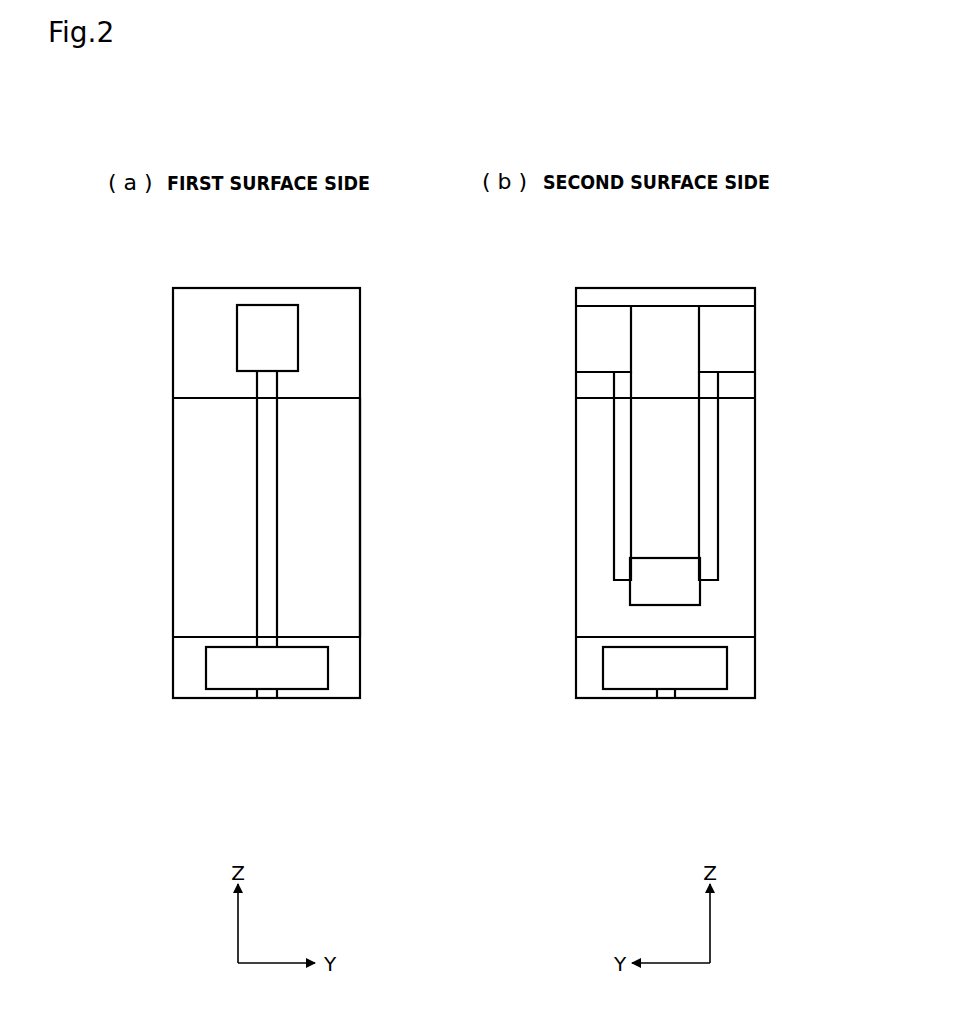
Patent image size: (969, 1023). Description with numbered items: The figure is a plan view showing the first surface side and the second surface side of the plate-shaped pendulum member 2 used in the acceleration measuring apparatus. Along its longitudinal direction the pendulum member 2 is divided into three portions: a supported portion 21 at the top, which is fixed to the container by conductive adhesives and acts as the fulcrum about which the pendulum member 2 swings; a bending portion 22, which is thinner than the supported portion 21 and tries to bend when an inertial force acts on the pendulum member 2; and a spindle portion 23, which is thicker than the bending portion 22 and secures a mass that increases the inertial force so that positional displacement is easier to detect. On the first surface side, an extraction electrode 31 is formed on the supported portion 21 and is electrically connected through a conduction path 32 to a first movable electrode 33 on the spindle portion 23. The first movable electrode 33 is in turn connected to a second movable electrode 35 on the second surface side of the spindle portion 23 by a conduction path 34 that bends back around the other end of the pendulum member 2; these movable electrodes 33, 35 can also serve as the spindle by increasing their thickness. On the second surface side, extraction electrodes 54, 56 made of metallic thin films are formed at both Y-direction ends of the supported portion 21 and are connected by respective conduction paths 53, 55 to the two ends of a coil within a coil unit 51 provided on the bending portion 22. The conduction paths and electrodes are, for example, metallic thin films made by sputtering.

The pendulum member 2 is at (207, 735).
The supported portion 21 is at (322, 288).
The bending portion 22 is at (360, 495).
The spindle portion 23 is at (360, 650).
The extraction electrode 31 is at (265, 312).
The conduction path 32 is at (257, 524).
The first movable electrode 33 is at (320, 672).
The conduction path 34 is at (267, 699).
The second movable electrode 35 is at (715, 672).
The coil unit 51 is at (630, 595).
The conduction path 53 is at (614, 455).
The extraction electrode 54 is at (576, 348).
The conduction path 55 is at (718, 455).
The extraction electrode 56 is at (755, 350).